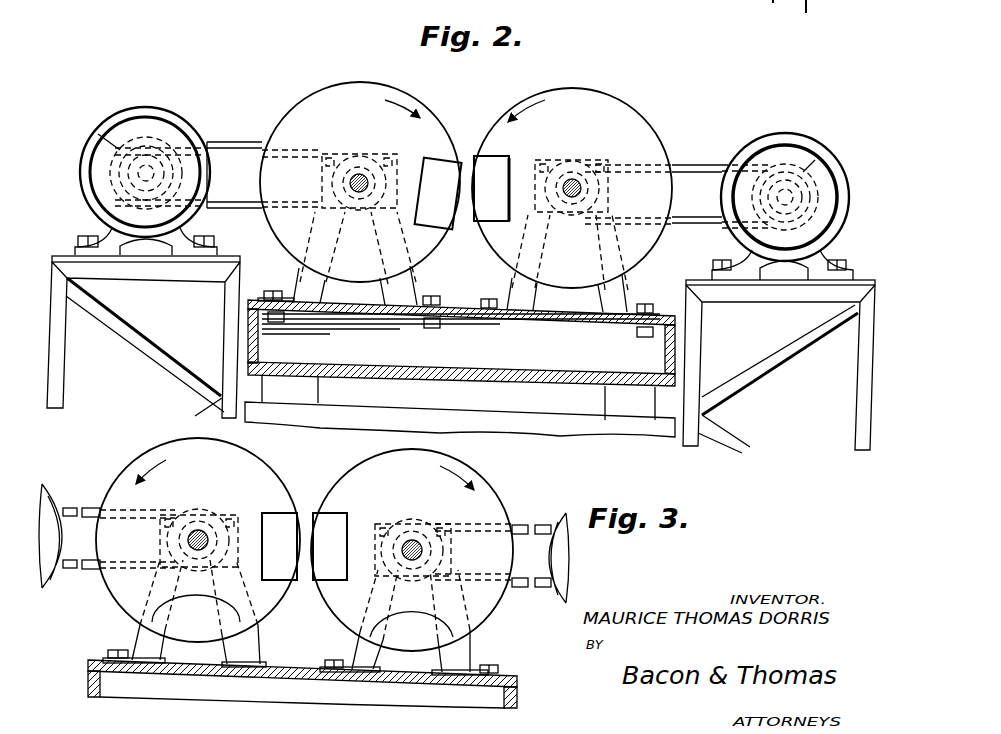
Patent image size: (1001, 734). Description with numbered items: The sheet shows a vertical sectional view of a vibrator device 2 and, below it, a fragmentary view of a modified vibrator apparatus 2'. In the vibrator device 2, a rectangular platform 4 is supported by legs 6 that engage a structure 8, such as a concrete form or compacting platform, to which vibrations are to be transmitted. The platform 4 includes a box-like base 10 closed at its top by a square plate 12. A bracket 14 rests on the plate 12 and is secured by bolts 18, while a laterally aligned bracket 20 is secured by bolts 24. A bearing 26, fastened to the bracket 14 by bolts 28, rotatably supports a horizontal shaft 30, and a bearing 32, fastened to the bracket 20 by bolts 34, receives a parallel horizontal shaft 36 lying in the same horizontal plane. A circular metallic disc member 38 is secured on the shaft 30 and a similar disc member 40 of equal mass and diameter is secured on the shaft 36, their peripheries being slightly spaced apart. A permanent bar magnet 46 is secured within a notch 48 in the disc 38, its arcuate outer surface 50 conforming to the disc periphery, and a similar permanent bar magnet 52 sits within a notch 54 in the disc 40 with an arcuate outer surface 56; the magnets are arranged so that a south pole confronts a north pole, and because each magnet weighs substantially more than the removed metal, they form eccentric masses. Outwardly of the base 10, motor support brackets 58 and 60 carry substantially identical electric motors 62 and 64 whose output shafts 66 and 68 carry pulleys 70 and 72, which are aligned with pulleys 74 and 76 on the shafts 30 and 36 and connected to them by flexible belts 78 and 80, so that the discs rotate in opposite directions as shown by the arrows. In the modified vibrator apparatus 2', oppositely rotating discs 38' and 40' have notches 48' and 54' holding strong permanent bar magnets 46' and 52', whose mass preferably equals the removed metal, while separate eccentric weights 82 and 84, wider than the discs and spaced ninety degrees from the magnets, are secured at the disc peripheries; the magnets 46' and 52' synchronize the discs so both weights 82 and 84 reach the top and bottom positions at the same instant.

In FIG. 2, the vibrator device 2 is at (672, 84).
In FIG. 3, the vibrator apparatus (modified form) 2' is at (510, 471).
In FIG. 2, the rectangular platform 4 is at (372, 300).
In FIG. 3, the rectangular platform 4 is at (520, 700).
In FIG. 2, the legs 6 is at (318, 388).
In FIG. 2, the structure 8 is at (618, 430).
In FIG. 2, the box-like base 10 is at (408, 374).
In FIG. 3, the box-like base 10 is at (90, 678).
In FIG. 2, the square plate 12 is at (458, 300).
In FIG. 3, the square plate 12 is at (510, 676).
In FIG. 2, the bracket 14 is at (295, 282).
In FIG. 3, the bracket 14 is at (245, 655).
In FIG. 2, the bolts 18 is at (282, 322).
In FIG. 3, the bolts 18 is at (112, 650).
In FIG. 2, the bracket 20 is at (530, 292).
In FIG. 3, the bracket 20 is at (466, 660).
In FIG. 2, the bolts 24 is at (490, 299).
In FIG. 3, the bolts 24 is at (330, 660).
In FIG. 2, the bearings 26 is at (382, 158).
In FIG. 2, the bolts 28 is at (322, 148).
In FIG. 2, the shaft 30 is at (357, 176).
In FIG. 3, the shaft 30 is at (198, 530).
In FIG. 2, the bearings 32 is at (548, 152).
In FIG. 2, the bolts 34 is at (606, 156).
In FIG. 2, the shaft 36 is at (570, 180).
In FIG. 3, the shaft 36 is at (414, 540).
In FIG. 2, the circular disc member 38 is at (360, 169).
In FIG. 3, the disc (modified form) 38' is at (198, 537).
In FIG. 2, the circular disc member 40 is at (572, 168).
In FIG. 3, the disc (modified form) 40' is at (412, 546).
In FIG. 2, the permanent bar magnet 46 is at (421, 237).
In FIG. 3, the permanent bar magnet (modified form) 46' is at (301, 491).
In FIG. 2, the notch 48 is at (430, 177).
In FIG. 3, the notch (modified form) 48' is at (263, 531).
In FIG. 2, the outer surface of bar magnet 50 is at (478, 226).
In FIG. 2, the permanent bar magnet 52 is at (505, 236).
In FIG. 3, the permanent bar magnet (modified form) 52' is at (344, 593).
In FIG. 2, the notch 54 is at (502, 172).
In FIG. 3, the notch (modified form) 54' is at (339, 528).
In FIG. 2, the outer surface of bar magnet 56 is at (480, 150).
In FIG. 2, the motor support bracket 58 is at (60, 335).
In FIG. 2, the motor support bracket 60 is at (740, 302).
In FIG. 2, the electric motor 62 is at (146, 108).
In FIG. 3, the electric motor 62 is at (48, 578).
In FIG. 2, the electric motor 64 is at (788, 132).
In FIG. 3, the electric motor 64 is at (568, 556).
In FIG. 2, the motor output shaft 66 is at (150, 142).
In FIG. 2, the motor output shaft 68 is at (792, 166).
In FIG. 2, the pulley 70 is at (98, 134).
In FIG. 2, the pulley 72 is at (815, 160).
In FIG. 2, the pulley 74 is at (332, 190).
In FIG. 3, the pulley 74 is at (168, 556).
In FIG. 2, the pulley 76 is at (602, 204).
In FIG. 3, the pulley 76 is at (452, 570).
In FIG. 2, the flexible belt 78 is at (240, 142).
In FIG. 3, the flexible belt 78 is at (86, 508).
In FIG. 2, the flexible belt 80 is at (716, 165).
In FIG. 3, the flexible belt 80 is at (542, 525).
In FIG. 3, the eccentric weight 82 is at (190, 598).
In FIG. 3, the eccentric weight 84 is at (428, 600).